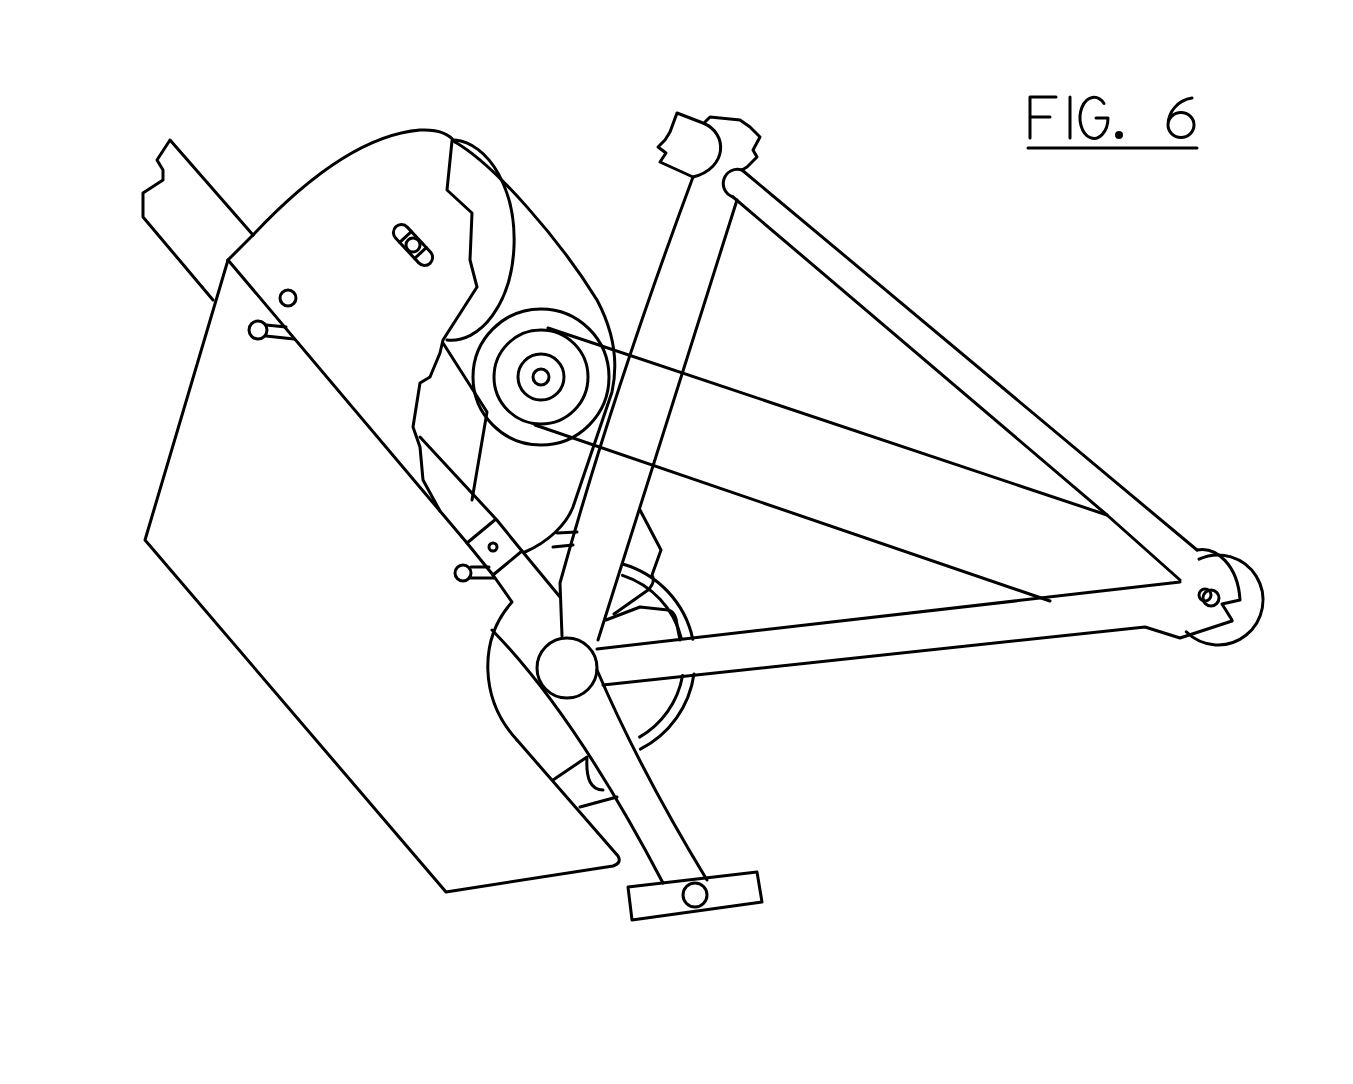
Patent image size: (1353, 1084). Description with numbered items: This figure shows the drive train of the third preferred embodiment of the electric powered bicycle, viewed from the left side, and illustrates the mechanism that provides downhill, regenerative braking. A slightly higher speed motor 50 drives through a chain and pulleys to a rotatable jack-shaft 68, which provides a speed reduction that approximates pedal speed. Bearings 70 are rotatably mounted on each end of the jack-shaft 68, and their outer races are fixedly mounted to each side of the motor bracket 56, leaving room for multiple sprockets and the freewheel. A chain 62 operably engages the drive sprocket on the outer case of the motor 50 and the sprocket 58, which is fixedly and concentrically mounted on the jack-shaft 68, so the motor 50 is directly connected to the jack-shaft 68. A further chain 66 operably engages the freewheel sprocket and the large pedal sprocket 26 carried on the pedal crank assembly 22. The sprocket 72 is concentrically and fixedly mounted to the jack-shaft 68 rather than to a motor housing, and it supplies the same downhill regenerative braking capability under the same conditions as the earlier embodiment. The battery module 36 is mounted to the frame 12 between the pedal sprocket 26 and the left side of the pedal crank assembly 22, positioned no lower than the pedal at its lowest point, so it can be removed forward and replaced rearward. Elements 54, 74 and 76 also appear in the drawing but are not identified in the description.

The frame and fork assembly 12 is at (817, 243).
The pedal crank assembly 22 is at (673, 850).
The pedal sprocket 26 is at (687, 703).
The battery module 36 is at (298, 509).
The motor 50 is at (473, 187).
The fastener 54 is at (403, 223).
The motor bracket 56 is at (292, 237).
The sprocket 58 is at (563, 313).
The chain 62 is at (540, 320).
The chain 66 is at (661, 547).
The jack-shaft 68 is at (541, 386).
The bearings 70 is at (524, 386).
The sprocket 72 is at (573, 363).
The brace 74 is at (752, 390).
The roller 76 is at (1234, 568).